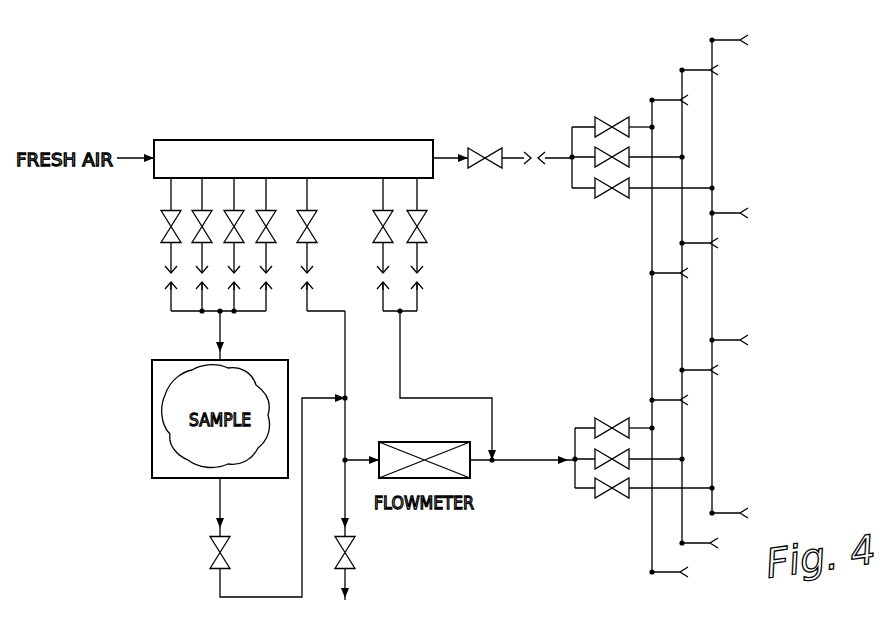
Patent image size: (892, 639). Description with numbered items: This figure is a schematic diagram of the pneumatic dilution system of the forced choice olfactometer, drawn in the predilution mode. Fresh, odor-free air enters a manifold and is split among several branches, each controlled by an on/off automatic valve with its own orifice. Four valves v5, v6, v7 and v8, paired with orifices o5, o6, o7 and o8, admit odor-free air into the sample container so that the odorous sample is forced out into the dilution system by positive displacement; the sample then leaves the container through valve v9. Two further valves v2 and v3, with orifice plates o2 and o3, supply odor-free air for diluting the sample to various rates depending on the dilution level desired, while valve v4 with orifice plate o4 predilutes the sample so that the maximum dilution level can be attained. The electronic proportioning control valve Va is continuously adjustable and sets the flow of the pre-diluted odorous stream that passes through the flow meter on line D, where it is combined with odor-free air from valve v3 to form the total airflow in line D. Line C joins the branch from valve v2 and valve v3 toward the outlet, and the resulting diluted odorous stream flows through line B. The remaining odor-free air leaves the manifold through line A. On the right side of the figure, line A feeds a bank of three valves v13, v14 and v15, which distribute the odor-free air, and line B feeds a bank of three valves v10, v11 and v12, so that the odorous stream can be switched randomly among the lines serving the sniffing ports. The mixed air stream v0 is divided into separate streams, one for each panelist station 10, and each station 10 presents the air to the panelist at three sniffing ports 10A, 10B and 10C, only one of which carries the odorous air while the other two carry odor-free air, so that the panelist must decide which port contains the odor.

The on/off automatic valve v2 is at (416, 210).
The on/off automatic valve v3 is at (382, 210).
The on/off automatic valve v4 is at (306, 210).
The on/off automatic valve v5 is at (163, 212).
The on/off automatic valve v6 is at (200, 212).
The on/off automatic valve v7 is at (233, 210).
The on/off automatic valve v8 is at (265, 210).
The valve v9 is at (212, 537).
The mixed air stream v0 is at (520, 458).
The on/off automatic valve v10 is at (620, 418).
The on/off automatic valve v11 is at (600, 465).
The on/off automatic valve v12 is at (606, 494).
The on/off automatic valve v13 is at (603, 118).
The on/off automatic valve v14 is at (600, 150).
The on/off automatic valve v15 is at (622, 197).
The electronic proportioning control valve Va is at (334, 499).
The orifice plate o2 is at (418, 272).
The orifice plate o3 is at (381, 270).
The orifice plate o4 is at (316, 285).
The orifice o5 is at (170, 287).
The orifice o6 is at (202, 288).
The orifice o7 is at (240, 290).
The orifice o8 is at (270, 290).
The line A is at (443, 160).
The line B is at (507, 457).
The line C is at (413, 397).
The line D is at (354, 455).
The panelist station 10 is at (638, 299).
The sniffing port 10A is at (673, 98).
The sniffing port 10B is at (688, 68).
The sniffing port 10C is at (708, 50).